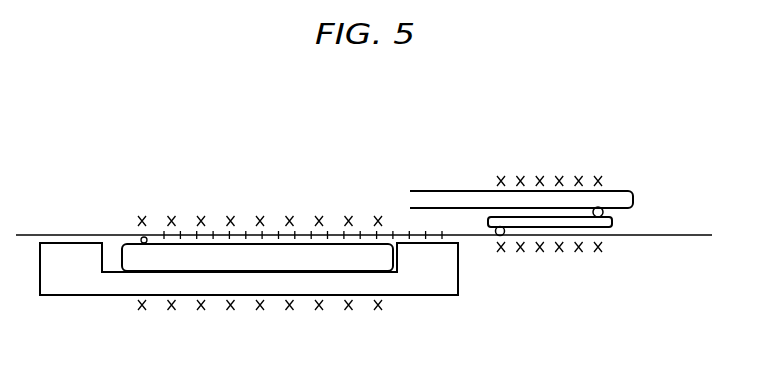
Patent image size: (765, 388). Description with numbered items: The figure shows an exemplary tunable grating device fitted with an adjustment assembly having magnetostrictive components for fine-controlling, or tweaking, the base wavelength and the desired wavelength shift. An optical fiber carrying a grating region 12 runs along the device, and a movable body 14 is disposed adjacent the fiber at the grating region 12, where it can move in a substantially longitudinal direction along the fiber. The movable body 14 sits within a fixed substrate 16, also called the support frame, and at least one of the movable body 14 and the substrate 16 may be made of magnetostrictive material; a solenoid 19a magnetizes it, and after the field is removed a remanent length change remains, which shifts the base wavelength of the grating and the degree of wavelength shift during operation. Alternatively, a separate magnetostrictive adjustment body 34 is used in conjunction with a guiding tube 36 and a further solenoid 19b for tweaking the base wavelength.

The grating region 12 is at (241, 224).
The movable body 14 is at (361, 282).
The fixed substrate 16 is at (67, 288).
The solenoid 19a is at (200, 312).
The solenoid 19b is at (558, 268).
The magnetostrictive adjustment body 34 is at (497, 222).
The guiding tube 36 is at (618, 202).